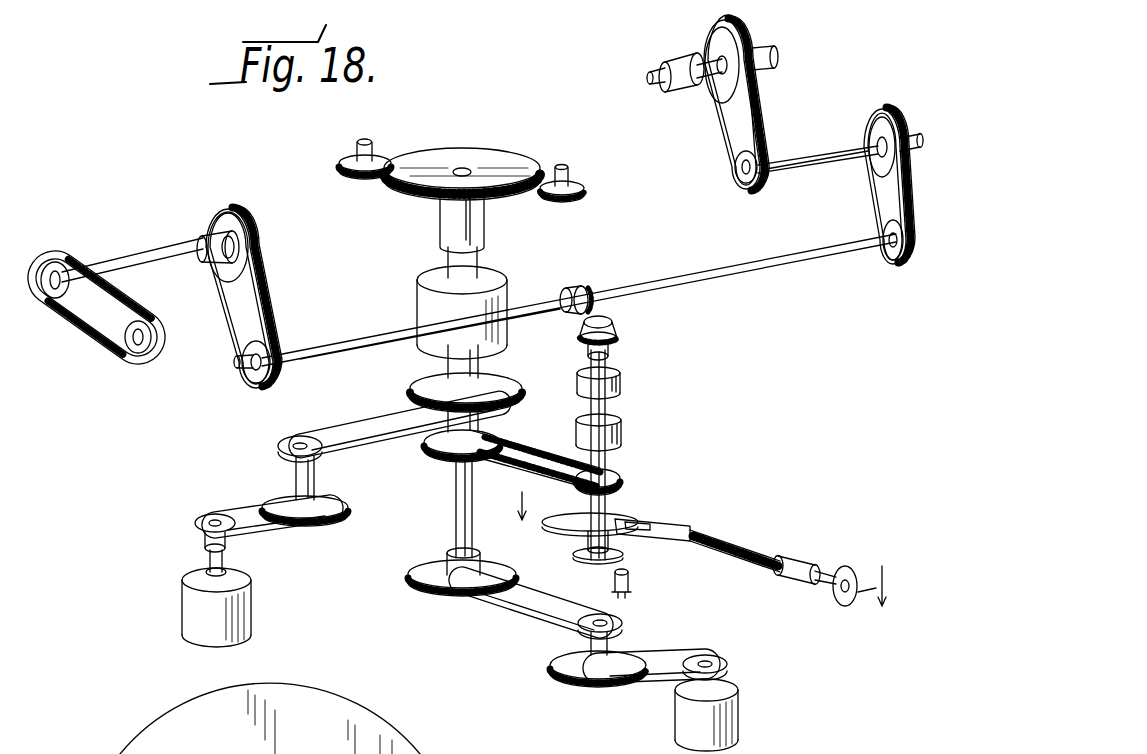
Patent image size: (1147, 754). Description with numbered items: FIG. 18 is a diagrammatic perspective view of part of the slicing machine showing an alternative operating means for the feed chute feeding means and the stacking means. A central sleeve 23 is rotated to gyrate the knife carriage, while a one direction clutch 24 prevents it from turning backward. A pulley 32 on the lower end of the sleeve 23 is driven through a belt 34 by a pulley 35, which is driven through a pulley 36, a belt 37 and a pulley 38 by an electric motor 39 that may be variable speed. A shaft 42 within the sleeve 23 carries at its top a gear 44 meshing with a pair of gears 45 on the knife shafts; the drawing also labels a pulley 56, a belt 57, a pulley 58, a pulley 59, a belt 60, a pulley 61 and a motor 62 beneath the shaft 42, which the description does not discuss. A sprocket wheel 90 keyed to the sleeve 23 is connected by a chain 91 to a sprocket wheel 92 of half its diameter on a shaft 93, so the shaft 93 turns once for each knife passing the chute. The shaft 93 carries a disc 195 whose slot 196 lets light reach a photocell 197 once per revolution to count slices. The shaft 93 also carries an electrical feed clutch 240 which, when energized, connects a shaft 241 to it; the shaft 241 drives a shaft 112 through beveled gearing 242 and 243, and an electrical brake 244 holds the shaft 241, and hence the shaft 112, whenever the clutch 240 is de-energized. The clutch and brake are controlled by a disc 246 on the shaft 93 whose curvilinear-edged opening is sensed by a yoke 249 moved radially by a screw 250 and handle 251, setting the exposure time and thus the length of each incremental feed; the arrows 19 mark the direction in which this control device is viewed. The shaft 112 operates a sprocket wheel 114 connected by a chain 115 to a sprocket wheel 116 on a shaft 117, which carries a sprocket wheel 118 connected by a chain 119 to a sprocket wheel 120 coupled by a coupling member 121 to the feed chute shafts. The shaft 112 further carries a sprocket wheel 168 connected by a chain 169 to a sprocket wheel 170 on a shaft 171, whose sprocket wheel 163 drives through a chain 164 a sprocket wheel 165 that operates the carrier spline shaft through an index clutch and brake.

The section line 19 is at (703, 550).
The sleeve 23 is at (488, 265).
The one direction clutch 24 is at (430, 294).
The pulley 32 is at (502, 386).
The belt 34 is at (349, 413).
The pulley 35 is at (280, 447).
The pulley 36 is at (325, 508).
The belt 37 is at (249, 510).
The pulley 38 is at (196, 526).
The electric motor 39 is at (250, 604).
The shaft 42 is at (455, 522).
The gear 44 is at (382, 190).
The gears 45 is at (350, 178).
The gear 56 is at (414, 573).
The arm 57 is at (514, 618).
The pivot 58 is at (625, 625).
The disk 59 is at (555, 673).
The arm 60 is at (680, 658).
The pivot 61 is at (732, 666).
The cylinder 62 is at (728, 707).
The sprocket wheel 90 is at (432, 452).
The chain 91 is at (532, 462).
The sprocket wheel 92 is at (644, 482).
The shaft 93 is at (622, 512).
The shaft 112 is at (734, 268).
The sprocket wheel 114 is at (886, 258).
The chain 115 is at (876, 206).
The sprocket wheel 116 is at (872, 168).
The shaft 117 is at (815, 152).
The sprocket wheel 118 is at (740, 170).
The chain 119 is at (716, 134).
The sprocket wheel 120 is at (736, 36).
The coupling member 121 is at (684, 72).
The sprocket wheel 163 is at (70, 258).
The chain 164 is at (82, 320).
The sprocket wheel 165 is at (145, 352).
The sprocket wheel 168 is at (250, 388).
The chain 169 is at (272, 303).
The sprocket wheel 170 is at (226, 214).
The shaft 171 is at (160, 255).
The disc 195 is at (562, 555).
The hole or slot 196 is at (626, 562).
The photocell 197 is at (635, 586).
The electrical feed clutch 240 is at (623, 440).
The shaft 241 is at (607, 408).
The beveled gearing 242 is at (622, 322).
The beveled gearing 243 is at (586, 290).
The electrical brake 244 is at (622, 386).
The disc 246 is at (660, 518).
The yoke 249 is at (694, 530).
The screw 250 is at (762, 562).
The handle 251 is at (858, 570).